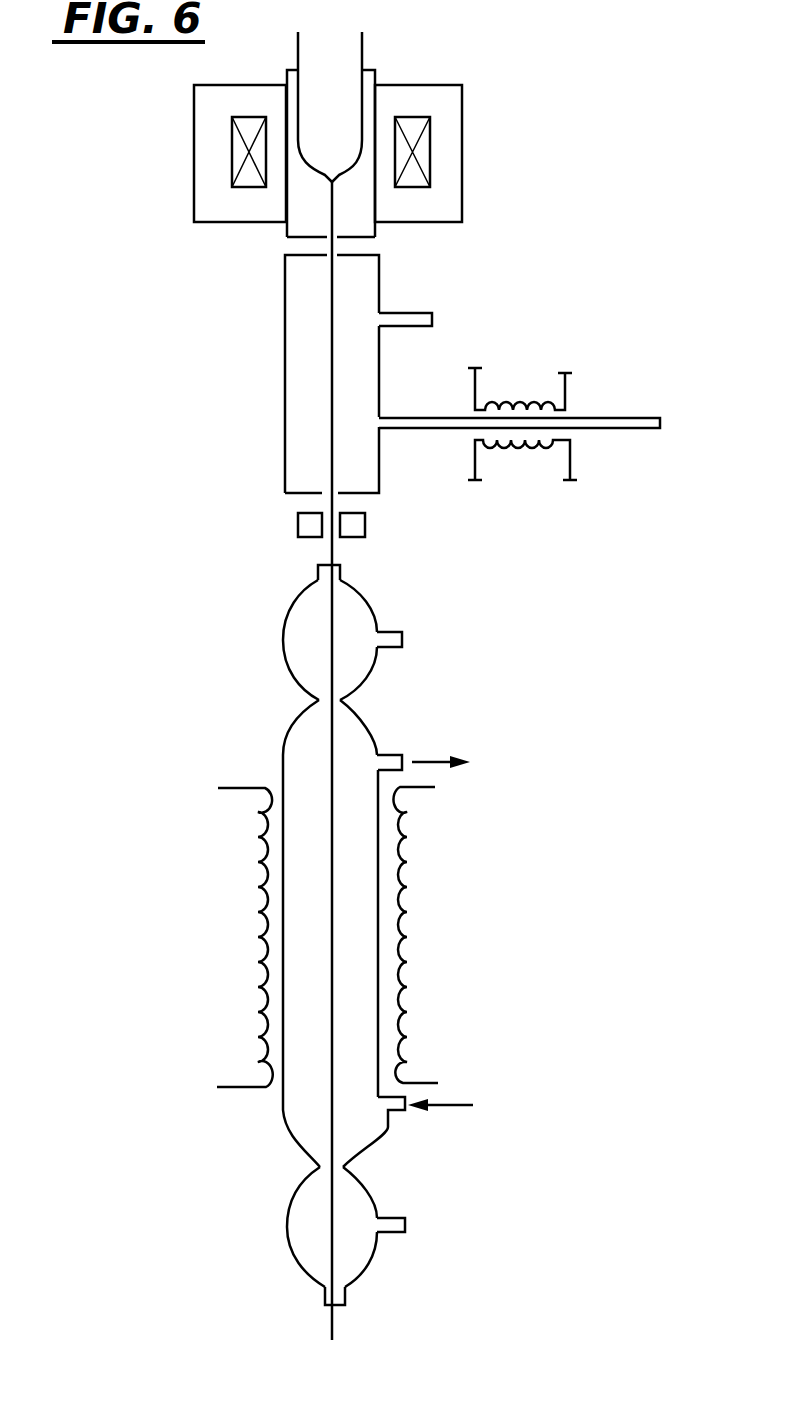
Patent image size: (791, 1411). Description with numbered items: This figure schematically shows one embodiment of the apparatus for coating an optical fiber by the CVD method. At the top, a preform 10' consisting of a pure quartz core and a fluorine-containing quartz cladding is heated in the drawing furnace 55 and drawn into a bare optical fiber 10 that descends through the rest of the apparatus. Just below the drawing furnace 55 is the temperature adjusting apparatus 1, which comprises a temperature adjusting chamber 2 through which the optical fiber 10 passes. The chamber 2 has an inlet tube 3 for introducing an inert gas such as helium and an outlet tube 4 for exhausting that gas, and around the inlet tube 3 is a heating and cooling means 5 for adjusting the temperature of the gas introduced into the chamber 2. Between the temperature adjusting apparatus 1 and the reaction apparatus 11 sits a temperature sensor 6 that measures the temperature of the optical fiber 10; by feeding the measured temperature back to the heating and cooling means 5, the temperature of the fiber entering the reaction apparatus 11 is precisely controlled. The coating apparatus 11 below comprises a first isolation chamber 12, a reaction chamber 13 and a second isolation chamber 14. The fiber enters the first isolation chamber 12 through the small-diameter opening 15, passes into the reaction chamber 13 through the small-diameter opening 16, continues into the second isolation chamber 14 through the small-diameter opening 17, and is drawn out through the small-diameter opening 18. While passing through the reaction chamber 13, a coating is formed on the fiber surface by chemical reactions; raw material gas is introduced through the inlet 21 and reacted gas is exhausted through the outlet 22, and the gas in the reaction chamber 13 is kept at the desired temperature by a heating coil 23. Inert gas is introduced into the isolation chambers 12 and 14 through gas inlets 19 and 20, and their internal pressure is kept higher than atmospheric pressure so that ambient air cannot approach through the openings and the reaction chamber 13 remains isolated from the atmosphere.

The temperature adjusting apparatus 1 is at (270, 317).
The temperature adjusting chamber 2 is at (373, 282).
The inlet tube 3 is at (603, 430).
The outlet tube 4 is at (430, 321).
The heating and cooling means 5 is at (567, 390).
The temperature sensor 6 is at (298, 524).
The optical fiber 10 is at (283, 761).
The preform 10' is at (367, 105).
The apparatus for coating the optical fiber 11 is at (414, 660).
The first isolation chamber 12 is at (288, 634).
The reaction chamber 13 is at (300, 1003).
The second isolation chamber 14 is at (300, 1231).
The small-diameter opening 15 is at (318, 578).
The small-diameter opening 16 is at (317, 702).
The small-diameter opening 17 is at (318, 1168).
The small-diameter opening 18 is at (323, 1289).
The gas inlet 19 is at (390, 633).
The gas inlet 20 is at (383, 1235).
The inlet 21 is at (388, 1112).
The outlet 22 is at (390, 757).
The heating coil 23 is at (233, 790).
The drawing furnace 55 is at (462, 105).